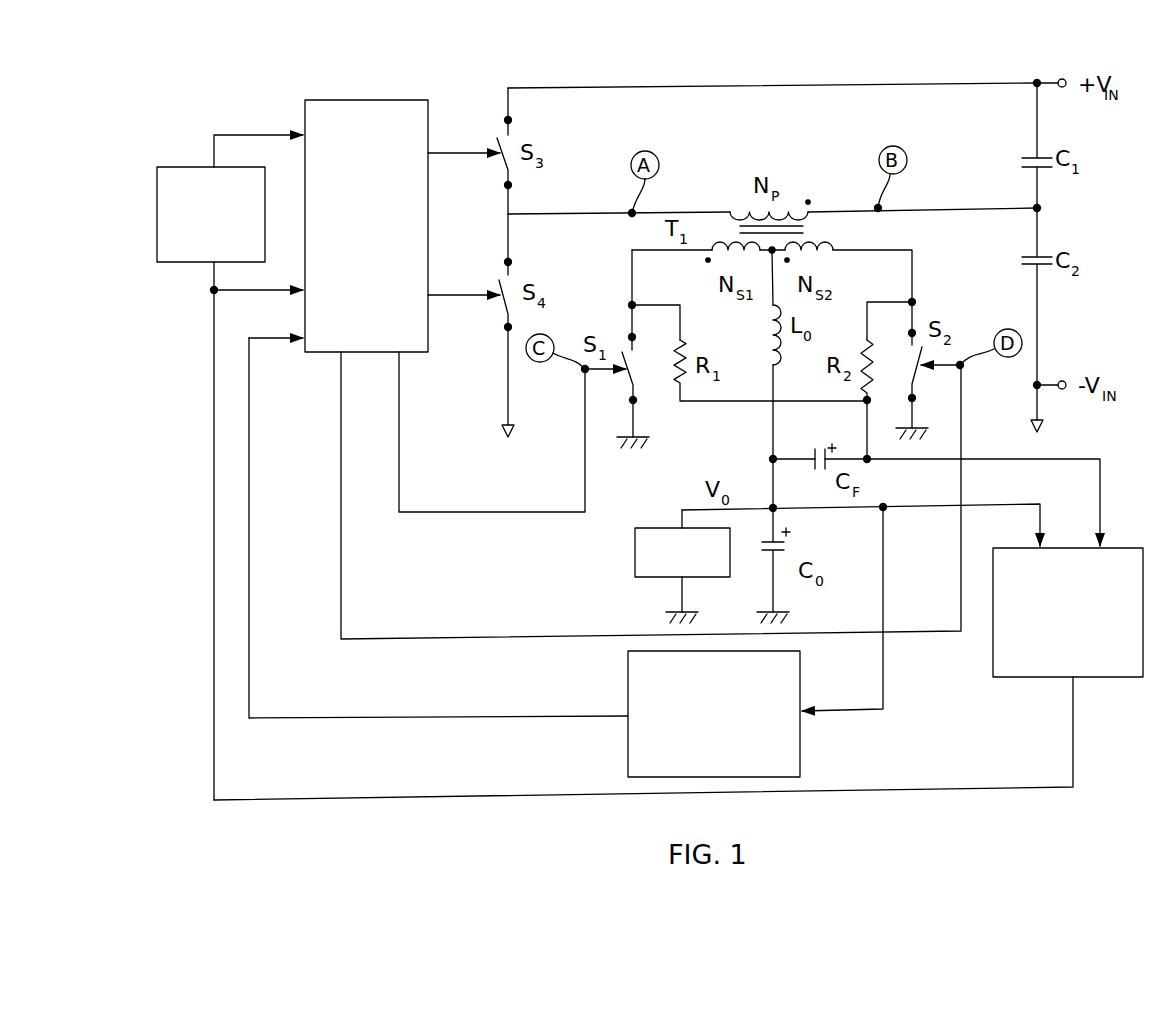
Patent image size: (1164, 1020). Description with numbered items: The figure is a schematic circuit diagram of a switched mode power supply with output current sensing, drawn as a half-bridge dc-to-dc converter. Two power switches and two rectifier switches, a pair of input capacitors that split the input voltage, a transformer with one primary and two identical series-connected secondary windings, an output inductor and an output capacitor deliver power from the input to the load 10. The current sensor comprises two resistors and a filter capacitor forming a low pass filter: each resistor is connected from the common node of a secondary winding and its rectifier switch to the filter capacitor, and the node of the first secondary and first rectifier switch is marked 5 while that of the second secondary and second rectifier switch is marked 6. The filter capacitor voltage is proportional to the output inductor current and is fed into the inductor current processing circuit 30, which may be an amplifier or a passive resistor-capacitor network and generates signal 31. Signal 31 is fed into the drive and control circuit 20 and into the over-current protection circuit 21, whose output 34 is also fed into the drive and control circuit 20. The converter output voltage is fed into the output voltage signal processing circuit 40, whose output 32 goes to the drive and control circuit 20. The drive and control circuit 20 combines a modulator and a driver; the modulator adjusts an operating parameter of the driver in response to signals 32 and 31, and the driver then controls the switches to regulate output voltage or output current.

The first secondary winding node 5 is at (632, 305).
The second secondary winding node 6 is at (912, 302).
The load 10 is at (665, 528).
The drive and control circuit 20 is at (316, 100).
The over-current protection circuit 21 is at (202, 167).
The inductor current processing circuit 30 is at (1120, 548).
The inductor current signal 31 is at (1073, 760).
The output voltage signal 32 is at (420, 718).
The over-current protection output 34 is at (258, 135).
The output voltage signal processing circuit 40 is at (628, 727).